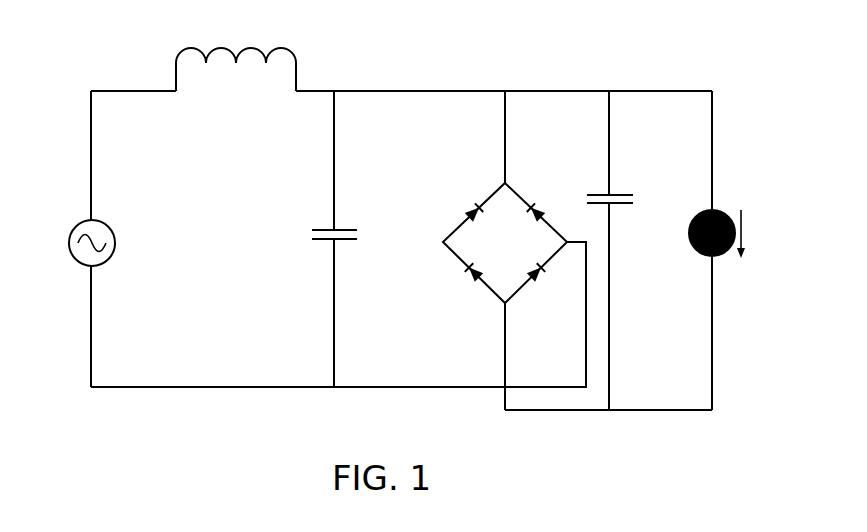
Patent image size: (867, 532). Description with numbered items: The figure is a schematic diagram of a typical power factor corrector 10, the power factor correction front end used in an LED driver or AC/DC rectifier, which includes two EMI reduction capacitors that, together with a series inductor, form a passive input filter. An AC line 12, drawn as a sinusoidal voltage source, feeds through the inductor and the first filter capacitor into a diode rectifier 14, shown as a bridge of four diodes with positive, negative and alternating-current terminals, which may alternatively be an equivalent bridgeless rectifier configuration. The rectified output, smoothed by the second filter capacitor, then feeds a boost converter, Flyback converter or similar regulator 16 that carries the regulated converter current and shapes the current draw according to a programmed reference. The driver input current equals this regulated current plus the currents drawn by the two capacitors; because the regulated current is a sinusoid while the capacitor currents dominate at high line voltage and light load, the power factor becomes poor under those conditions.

The power factor corrector 10 is at (458, 58).
The AC line 12 is at (78, 224).
The diode rectifier 14 is at (470, 188).
The regulator 16 is at (730, 200).